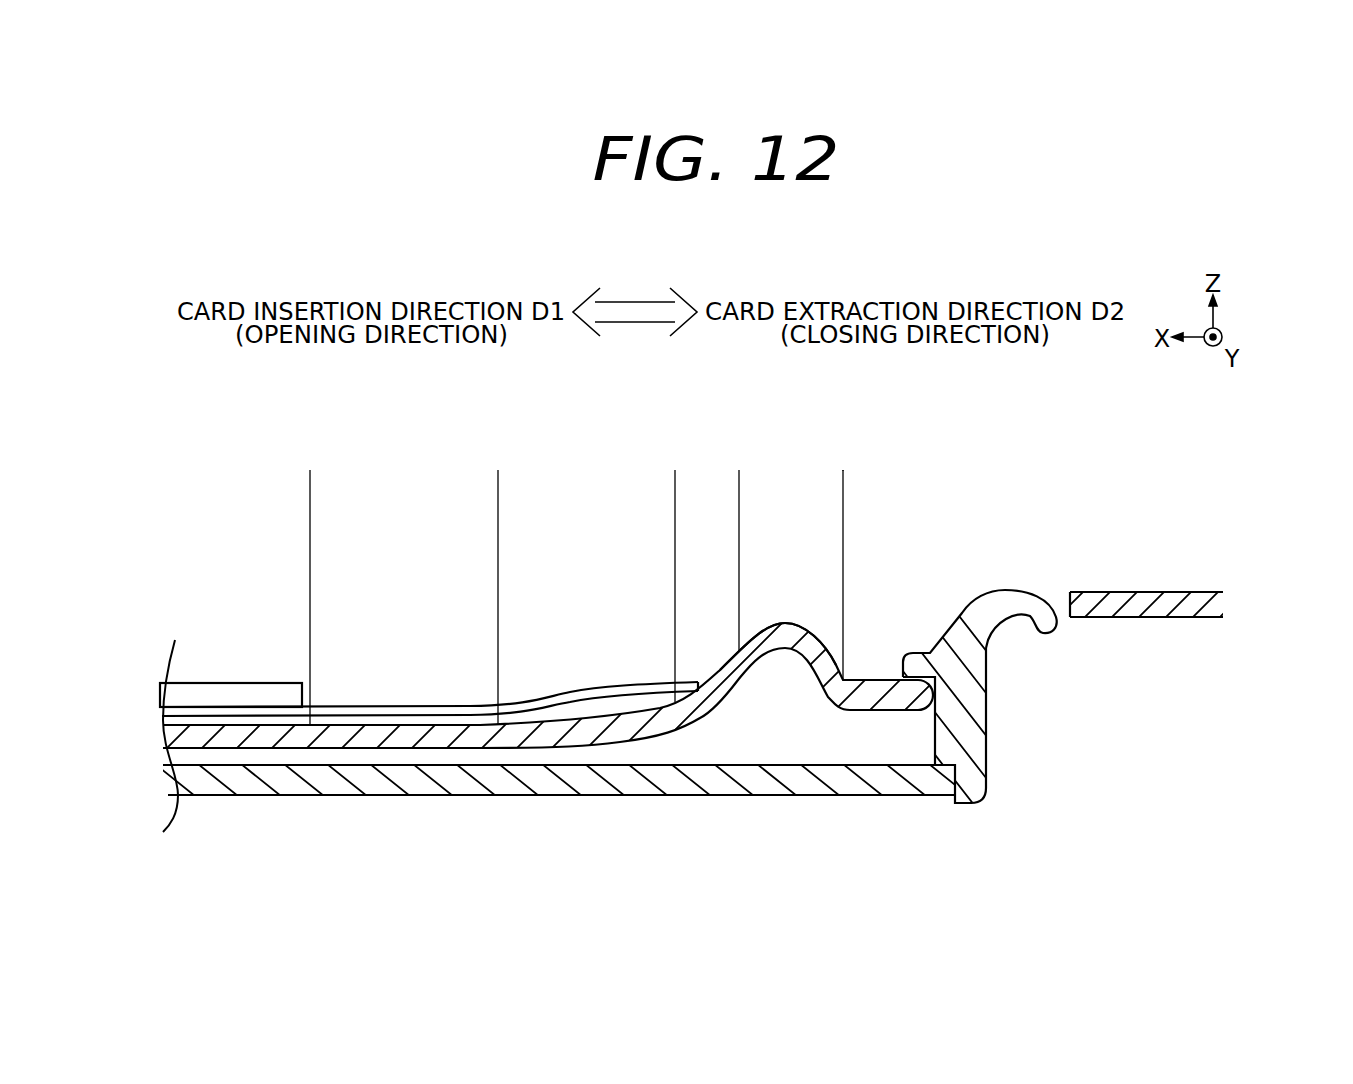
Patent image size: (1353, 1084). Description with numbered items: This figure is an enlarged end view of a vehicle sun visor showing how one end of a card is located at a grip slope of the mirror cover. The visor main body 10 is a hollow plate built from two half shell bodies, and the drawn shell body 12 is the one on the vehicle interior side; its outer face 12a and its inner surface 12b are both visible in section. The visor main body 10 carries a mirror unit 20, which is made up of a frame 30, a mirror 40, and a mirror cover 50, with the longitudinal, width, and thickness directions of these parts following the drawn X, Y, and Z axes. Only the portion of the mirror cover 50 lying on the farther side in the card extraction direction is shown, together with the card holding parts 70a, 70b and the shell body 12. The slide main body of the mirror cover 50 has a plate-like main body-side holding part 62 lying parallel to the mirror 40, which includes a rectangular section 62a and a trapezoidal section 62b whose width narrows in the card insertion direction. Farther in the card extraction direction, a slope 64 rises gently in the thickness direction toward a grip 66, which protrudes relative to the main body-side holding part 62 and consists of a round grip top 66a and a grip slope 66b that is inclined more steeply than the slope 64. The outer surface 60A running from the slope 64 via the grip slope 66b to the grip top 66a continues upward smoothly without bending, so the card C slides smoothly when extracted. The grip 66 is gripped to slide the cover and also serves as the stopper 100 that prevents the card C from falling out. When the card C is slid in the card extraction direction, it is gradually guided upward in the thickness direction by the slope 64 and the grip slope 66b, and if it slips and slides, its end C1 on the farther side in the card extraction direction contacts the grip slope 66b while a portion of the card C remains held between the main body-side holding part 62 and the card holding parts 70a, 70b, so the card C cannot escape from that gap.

The visor main body 10 is at (1159, 601).
The shell body 12 is at (1151, 601).
The outer face of the shell body 12a is at (1133, 592).
The inner surface of the shell body 12b is at (1140, 617).
The mirror unit 20 is at (937, 480).
The frame 30 is at (990, 706).
The mirror 40 is at (852, 787).
The mirror cover 50 is at (862, 610).
The outer surface 60A is at (727, 673).
The main body-side holding part 62 is at (429, 584).
The rectangular section 62a is at (310, 478).
The trapezoidal section 62b is at (310, 478).
The slope 64 is at (498, 478).
The grip 66 is at (682, 445).
The grip top 66a is at (739, 478).
The grip slope 66b is at (675, 478).
The stopper 100 is at (778, 646).
The card holding part 70a is at (232, 697).
The card holding part 70b is at (262, 690).
The card C is at (563, 700).
The end of the card C1 is at (712, 690).